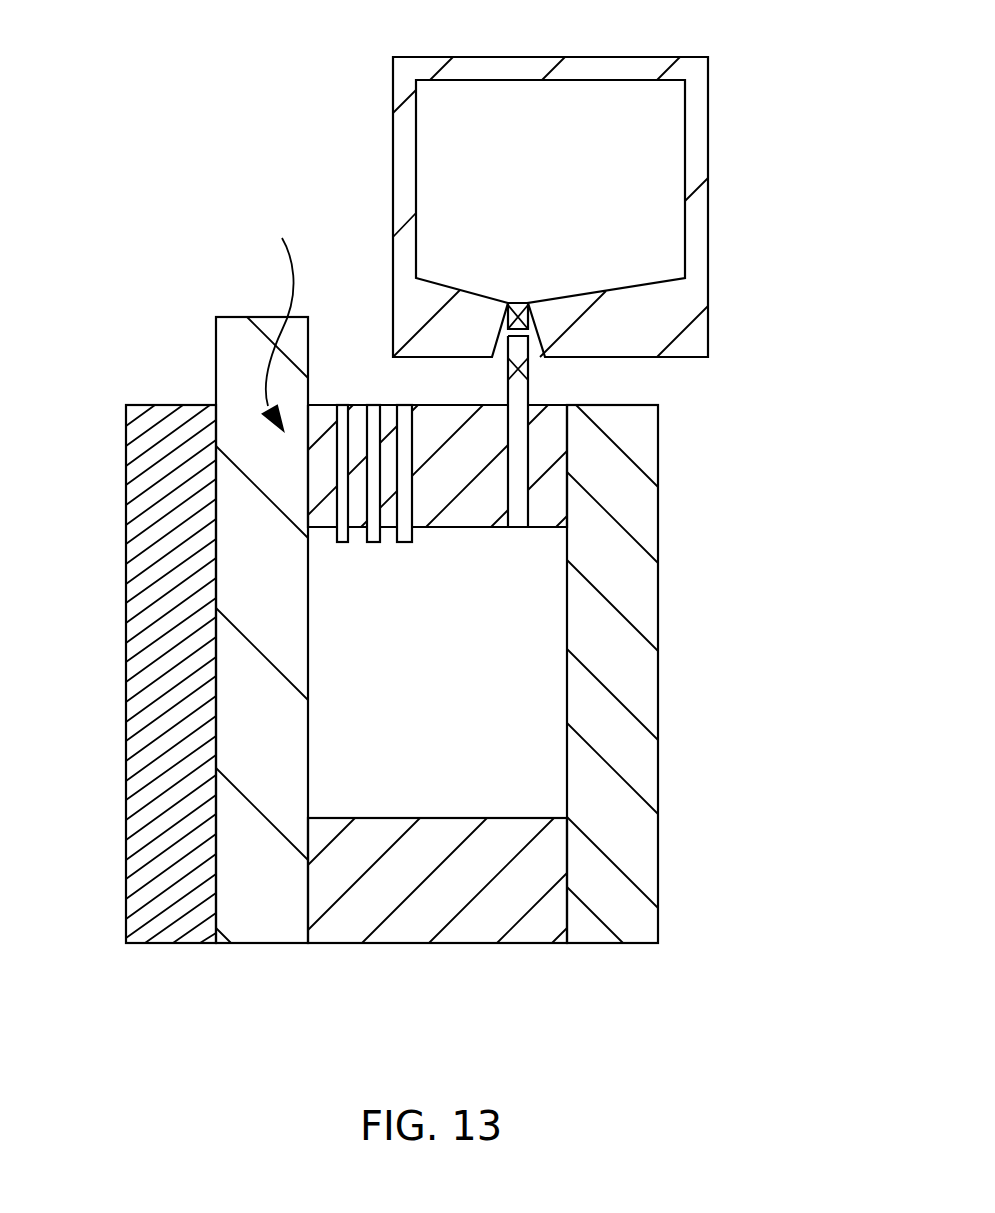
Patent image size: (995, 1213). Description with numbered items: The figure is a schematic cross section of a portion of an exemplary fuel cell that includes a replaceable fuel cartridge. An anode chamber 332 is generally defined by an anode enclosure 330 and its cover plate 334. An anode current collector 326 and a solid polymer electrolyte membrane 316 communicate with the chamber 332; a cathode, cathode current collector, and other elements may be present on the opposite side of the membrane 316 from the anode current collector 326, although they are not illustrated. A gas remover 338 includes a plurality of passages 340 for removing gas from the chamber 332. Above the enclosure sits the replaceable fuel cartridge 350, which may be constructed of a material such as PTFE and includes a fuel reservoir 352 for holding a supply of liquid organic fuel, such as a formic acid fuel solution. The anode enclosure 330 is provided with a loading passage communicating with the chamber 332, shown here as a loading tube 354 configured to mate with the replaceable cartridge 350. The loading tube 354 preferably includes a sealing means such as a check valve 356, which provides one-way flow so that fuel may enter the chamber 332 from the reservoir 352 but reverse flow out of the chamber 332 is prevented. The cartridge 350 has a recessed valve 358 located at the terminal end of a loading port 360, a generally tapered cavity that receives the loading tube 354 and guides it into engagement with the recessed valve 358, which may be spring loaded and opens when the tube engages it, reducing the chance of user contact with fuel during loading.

The solid polymer electrolyte membrane 316 is at (152, 872).
The anode current collector 326 is at (265, 855).
The anode enclosure 330 is at (355, 918).
The anode chamber 332 is at (455, 731).
The cover plate 334 is at (622, 753).
The gas remover 338 is at (266, 314).
The passages 340 is at (412, 487).
The replaceable fuel cartridge 350 is at (708, 143).
The fuel reservoir 352 is at (638, 150).
The loading tube 354 is at (545, 462).
The check valve 356 is at (529, 368).
The recessed valve 358 is at (515, 303).
The loading port 360 is at (541, 353).